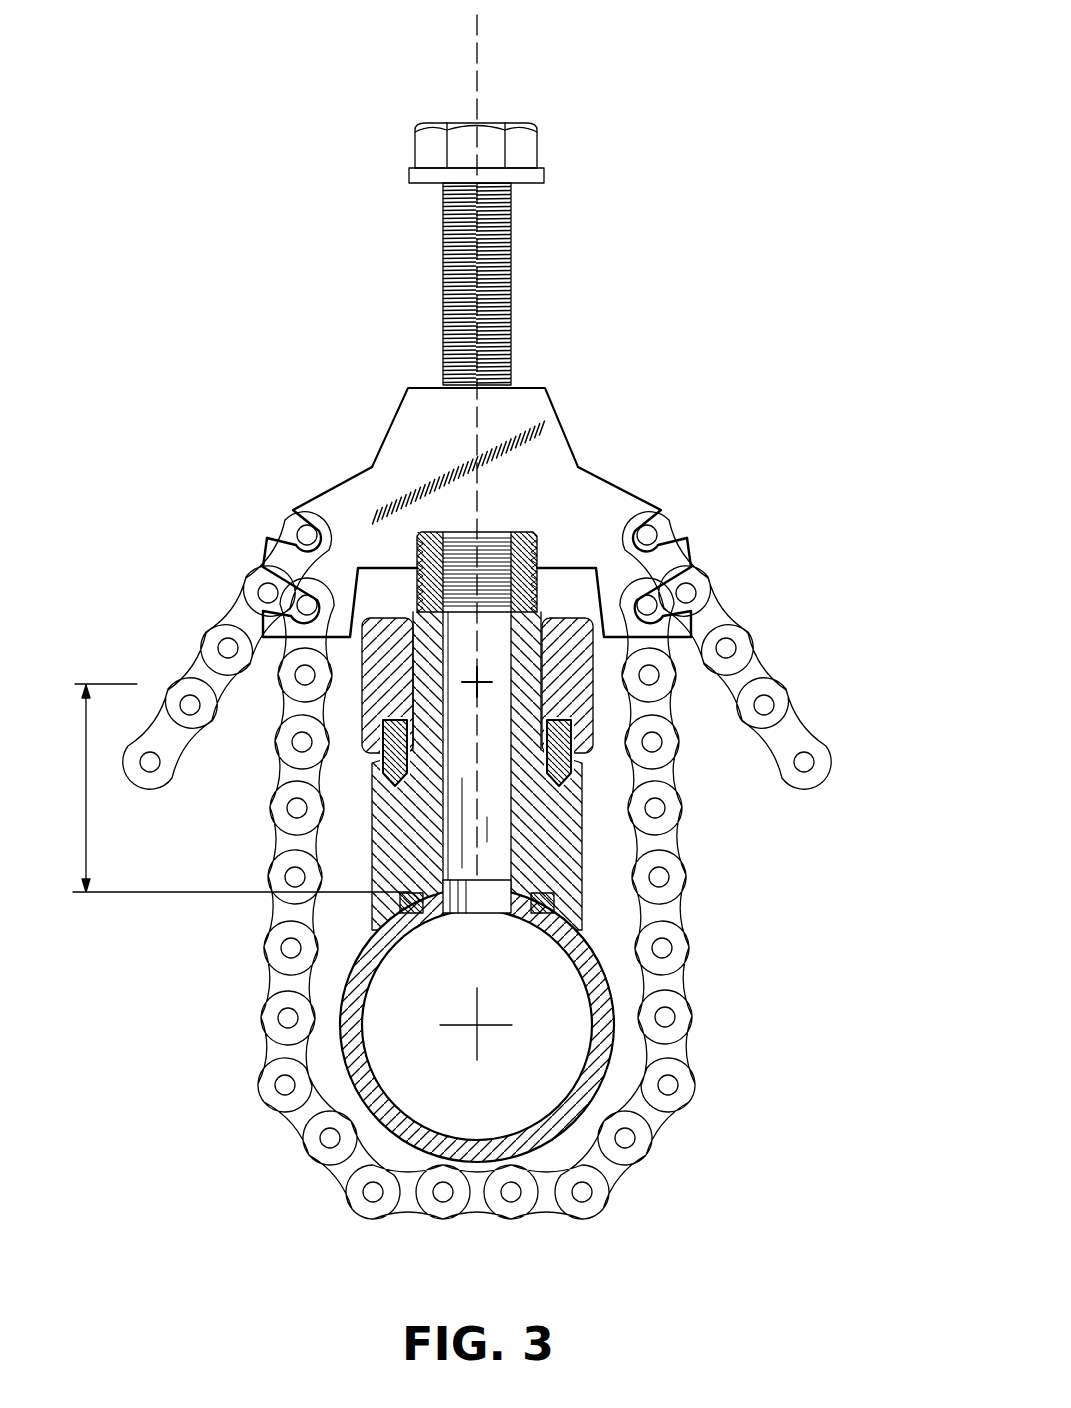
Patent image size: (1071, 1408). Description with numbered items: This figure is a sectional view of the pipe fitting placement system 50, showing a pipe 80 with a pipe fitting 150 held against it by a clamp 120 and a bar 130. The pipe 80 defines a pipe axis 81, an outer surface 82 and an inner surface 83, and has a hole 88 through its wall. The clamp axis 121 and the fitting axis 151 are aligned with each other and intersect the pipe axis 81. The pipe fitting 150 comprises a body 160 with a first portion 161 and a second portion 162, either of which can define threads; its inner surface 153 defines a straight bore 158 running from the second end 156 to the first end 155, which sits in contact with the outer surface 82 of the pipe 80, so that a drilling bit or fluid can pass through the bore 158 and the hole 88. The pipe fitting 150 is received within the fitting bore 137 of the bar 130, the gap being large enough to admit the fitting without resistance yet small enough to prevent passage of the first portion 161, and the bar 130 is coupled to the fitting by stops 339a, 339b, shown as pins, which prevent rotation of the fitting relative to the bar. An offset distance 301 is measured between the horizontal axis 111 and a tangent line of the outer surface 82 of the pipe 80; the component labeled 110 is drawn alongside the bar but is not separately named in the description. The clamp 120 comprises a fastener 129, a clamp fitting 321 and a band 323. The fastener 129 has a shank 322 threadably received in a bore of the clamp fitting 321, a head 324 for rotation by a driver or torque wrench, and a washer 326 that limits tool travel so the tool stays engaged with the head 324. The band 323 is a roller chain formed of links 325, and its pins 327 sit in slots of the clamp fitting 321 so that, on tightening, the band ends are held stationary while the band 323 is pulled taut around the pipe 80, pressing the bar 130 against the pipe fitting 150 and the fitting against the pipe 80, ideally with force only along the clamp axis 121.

The pipe fitting placement system 50 is at (461, 609).
The pipe 80 is at (442, 1048).
The pipe axis 81 is at (473, 1030).
The outer surface 82 is at (331, 1077).
The inner surface 83 is at (580, 1034).
The hole 88 is at (495, 895).
The body 110 is at (491, 607).
The bar 130 is at (491, 607).
The horizontal axis 111 is at (262, 658).
The clamp 120 is at (472, 420).
The clamp axis 121 is at (477, 60).
The fastener 129 is at (528, 150).
The fitting bore 137 is at (542, 679).
The pipe fitting 150 is at (507, 771).
The body 160 is at (507, 771).
The first portion 161 is at (507, 771).
The fitting axis 151 is at (473, 497).
The inner surface 153 is at (275, 771).
The bore 158 is at (372, 848).
The first end 155 is at (385, 985).
The second end 156 is at (500, 530).
The second portion 162 is at (560, 588).
The offset distance 301 is at (84, 792).
The clamp fitting 321 is at (472, 420).
The shank 322 is at (510, 265).
The band 323 is at (501, 865).
The links 325 is at (672, 973).
The head 324 is at (480, 123).
The washer 326 is at (412, 182).
The pins 327 is at (617, 515).
The stop 339a is at (565, 740).
The stop 339b is at (378, 737).